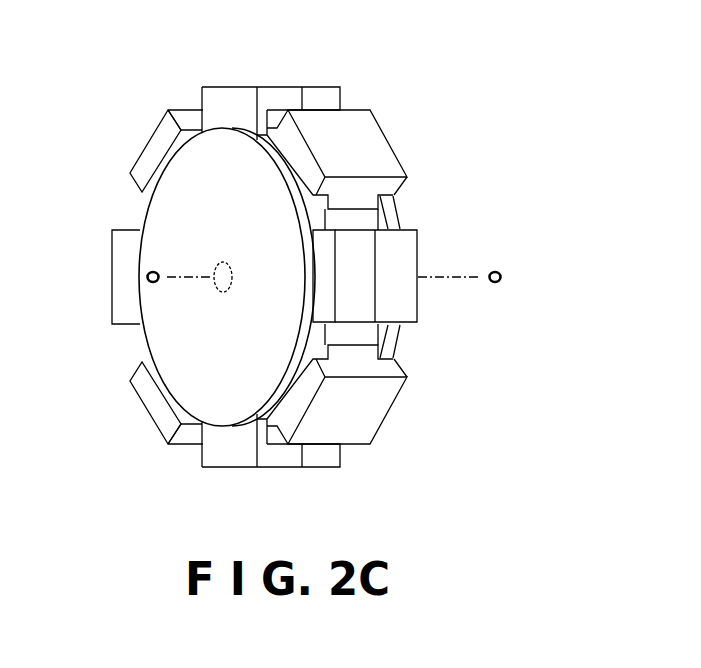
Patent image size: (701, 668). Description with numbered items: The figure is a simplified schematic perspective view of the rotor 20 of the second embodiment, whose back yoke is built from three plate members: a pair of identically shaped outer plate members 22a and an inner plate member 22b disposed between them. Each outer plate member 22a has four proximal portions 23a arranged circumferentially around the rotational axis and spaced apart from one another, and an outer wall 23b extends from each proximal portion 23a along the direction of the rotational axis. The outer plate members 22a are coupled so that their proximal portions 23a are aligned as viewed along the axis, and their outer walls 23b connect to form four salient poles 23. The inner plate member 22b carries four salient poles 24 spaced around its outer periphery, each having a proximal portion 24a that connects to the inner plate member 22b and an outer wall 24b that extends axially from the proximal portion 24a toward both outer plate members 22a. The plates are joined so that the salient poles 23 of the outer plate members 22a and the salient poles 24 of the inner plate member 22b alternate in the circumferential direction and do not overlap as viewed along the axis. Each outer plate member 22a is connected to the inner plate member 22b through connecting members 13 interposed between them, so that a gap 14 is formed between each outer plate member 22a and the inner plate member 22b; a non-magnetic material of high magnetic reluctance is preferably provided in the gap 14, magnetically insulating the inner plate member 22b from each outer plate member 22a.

The connecting member 13 is at (220, 263).
The gap 14 is at (320, 221).
The rotor 20 is at (133, 217).
The outer plate member 22a is at (397, 205).
The inner plate member 22b is at (362, 350).
The salient pole 23 is at (275, 280).
The proximal portion 23a is at (242, 133).
The outer wall 23b is at (298, 98).
The salient pole 24 is at (290, 283).
The proximal portion 24a is at (200, 130).
The outer wall 24b is at (155, 150).